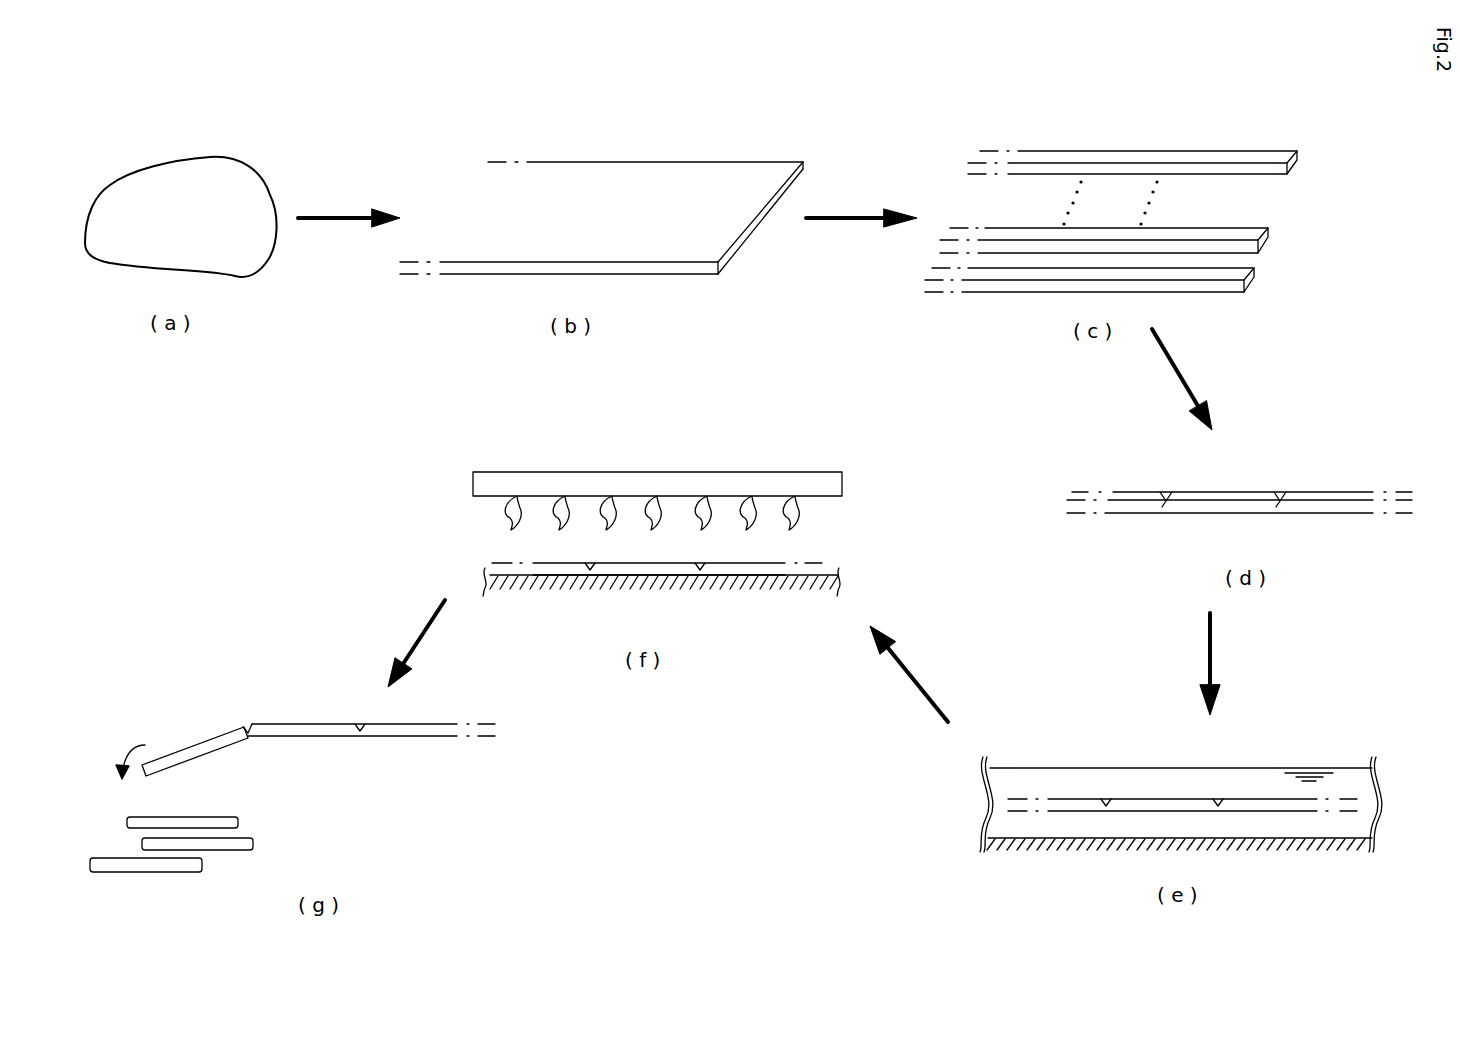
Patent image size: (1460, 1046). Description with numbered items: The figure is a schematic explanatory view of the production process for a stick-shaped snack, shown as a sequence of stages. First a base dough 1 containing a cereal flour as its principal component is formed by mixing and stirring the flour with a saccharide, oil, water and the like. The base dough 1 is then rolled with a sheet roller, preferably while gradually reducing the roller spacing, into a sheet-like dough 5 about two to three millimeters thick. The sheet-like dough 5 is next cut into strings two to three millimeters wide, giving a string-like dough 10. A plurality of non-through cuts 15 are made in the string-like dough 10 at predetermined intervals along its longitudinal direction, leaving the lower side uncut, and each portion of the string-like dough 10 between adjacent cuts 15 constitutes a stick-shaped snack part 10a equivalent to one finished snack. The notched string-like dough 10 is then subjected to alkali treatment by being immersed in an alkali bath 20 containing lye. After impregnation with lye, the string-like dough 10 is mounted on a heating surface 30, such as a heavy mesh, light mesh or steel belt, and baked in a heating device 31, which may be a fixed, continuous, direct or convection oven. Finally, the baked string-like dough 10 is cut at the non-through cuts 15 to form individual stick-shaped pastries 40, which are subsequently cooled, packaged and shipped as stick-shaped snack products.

The base dough 1 is at (245, 158).
The sheet-like dough 5 is at (692, 162).
The string-like dough 10 is at (1195, 150).
The non-through cuts 15 is at (1166, 487).
The stick-shaped snack part 10a is at (1130, 507).
The alkali bath 20 is at (1336, 752).
The heating surface 30 is at (827, 575).
The heating device 31 is at (827, 461).
The stick-shaped pastries 40 is at (238, 822).